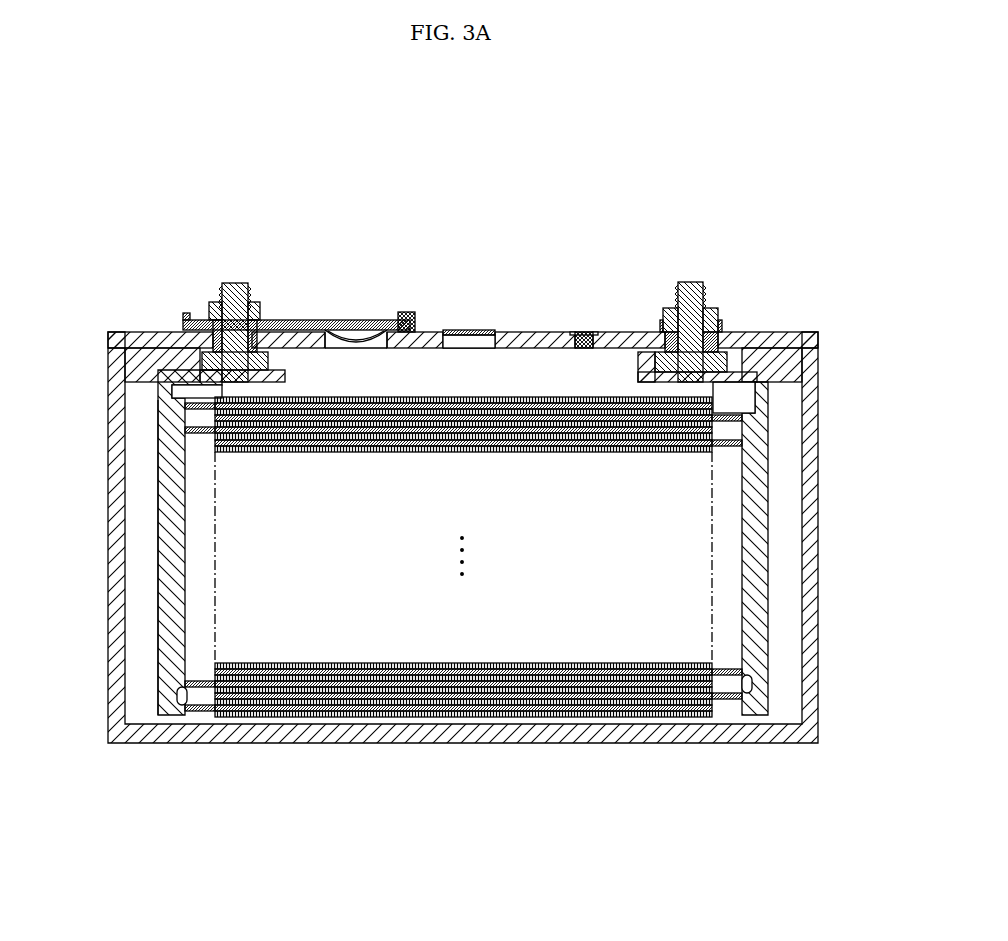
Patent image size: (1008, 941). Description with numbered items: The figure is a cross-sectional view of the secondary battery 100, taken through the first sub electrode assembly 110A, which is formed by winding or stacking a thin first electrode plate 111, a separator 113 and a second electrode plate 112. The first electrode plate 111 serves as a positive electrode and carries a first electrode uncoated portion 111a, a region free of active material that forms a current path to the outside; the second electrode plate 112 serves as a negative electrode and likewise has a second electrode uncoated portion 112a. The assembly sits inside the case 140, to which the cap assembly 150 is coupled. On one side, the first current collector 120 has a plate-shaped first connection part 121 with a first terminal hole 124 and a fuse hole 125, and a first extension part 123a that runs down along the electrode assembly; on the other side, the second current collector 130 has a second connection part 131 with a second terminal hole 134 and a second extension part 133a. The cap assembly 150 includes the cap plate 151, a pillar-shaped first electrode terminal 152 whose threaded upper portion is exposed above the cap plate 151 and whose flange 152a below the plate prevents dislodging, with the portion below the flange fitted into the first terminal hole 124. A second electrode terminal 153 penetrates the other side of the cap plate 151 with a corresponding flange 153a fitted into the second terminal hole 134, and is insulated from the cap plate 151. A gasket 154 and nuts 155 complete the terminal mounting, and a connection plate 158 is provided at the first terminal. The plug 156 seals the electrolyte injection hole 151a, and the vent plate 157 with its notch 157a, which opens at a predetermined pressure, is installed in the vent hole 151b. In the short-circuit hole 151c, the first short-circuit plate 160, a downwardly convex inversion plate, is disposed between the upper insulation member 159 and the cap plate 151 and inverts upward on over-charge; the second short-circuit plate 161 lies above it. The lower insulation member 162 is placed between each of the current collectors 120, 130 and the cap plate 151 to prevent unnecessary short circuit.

The secondary battery 100 is at (776, 196).
The first sub electrode assembly 110A is at (557, 722).
The first electrode plate 111 is at (633, 720).
The first electrode uncoated portion 111a is at (735, 705).
The second electrode plate 112 is at (338, 712).
The second electrode uncoated portion 112a is at (195, 717).
The separator 113 is at (480, 715).
The first current collector 120 is at (771, 492).
The first connection part 121 is at (745, 340).
The first extension part 123a is at (755, 555).
The first terminal hole 124 is at (720, 390).
The fuse hole 125 is at (788, 360).
The second current collector 130 is at (157, 492).
The second connection part 131 is at (190, 340).
The second extension part 133a is at (170, 574).
The second terminal hole 134 is at (205, 392).
The case 140 is at (805, 447).
The cap assembly 150 is at (541, 244).
The cap plate 151 is at (540, 332).
The electrolyte injection hole 151a is at (585, 352).
The vent hole 151b is at (457, 350).
The short-circuit hole 151c is at (375, 350).
The first electrode terminal 152 is at (690, 282).
The flange 152a is at (652, 362).
The second electrode terminal 153 is at (234, 283).
The flange 153a is at (288, 367).
The gasket 154 is at (212, 330).
The nut 155 is at (255, 302).
The plug 156 is at (585, 332).
The vent plate 157 is at (488, 335).
The notch 157a is at (455, 331).
The connection plate 158 is at (720, 325).
The upper insulation member 159 is at (405, 312).
The first short-circuit plate 160 is at (352, 340).
The second short-circuit plate 161 is at (300, 320).
The lower insulation member 162 is at (112, 349).